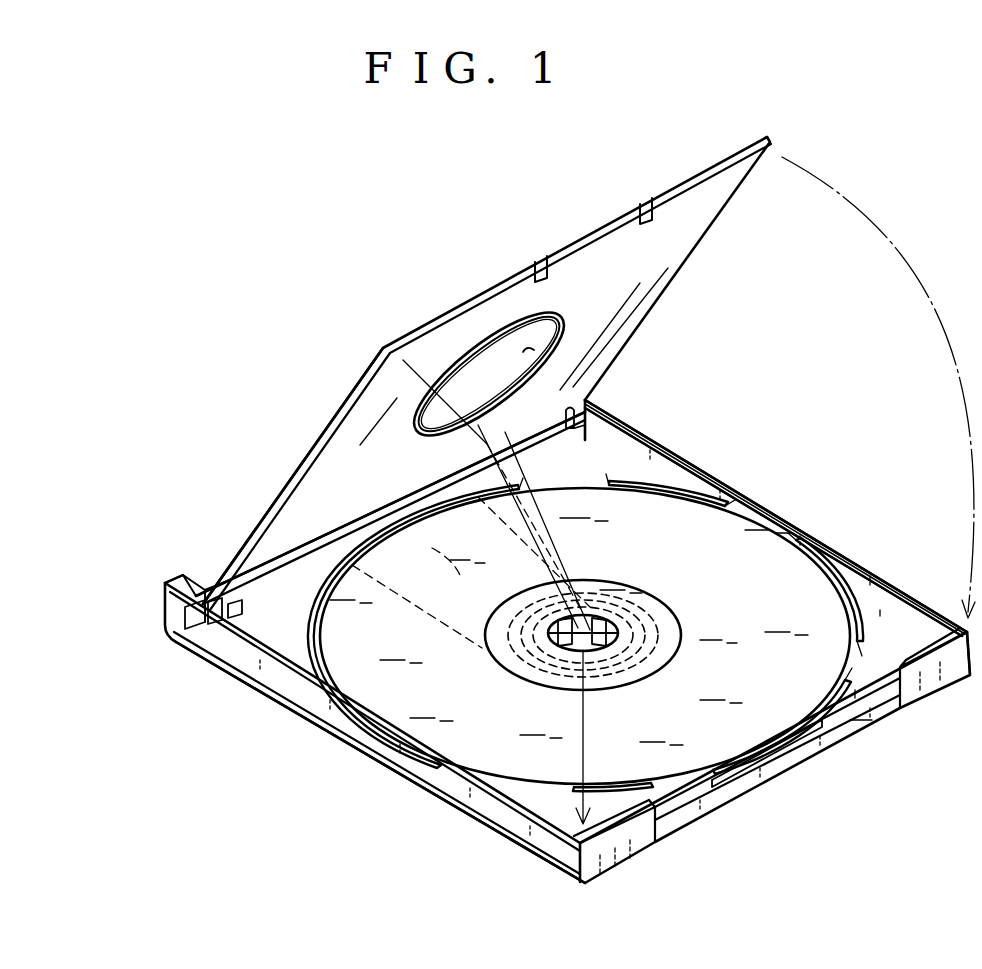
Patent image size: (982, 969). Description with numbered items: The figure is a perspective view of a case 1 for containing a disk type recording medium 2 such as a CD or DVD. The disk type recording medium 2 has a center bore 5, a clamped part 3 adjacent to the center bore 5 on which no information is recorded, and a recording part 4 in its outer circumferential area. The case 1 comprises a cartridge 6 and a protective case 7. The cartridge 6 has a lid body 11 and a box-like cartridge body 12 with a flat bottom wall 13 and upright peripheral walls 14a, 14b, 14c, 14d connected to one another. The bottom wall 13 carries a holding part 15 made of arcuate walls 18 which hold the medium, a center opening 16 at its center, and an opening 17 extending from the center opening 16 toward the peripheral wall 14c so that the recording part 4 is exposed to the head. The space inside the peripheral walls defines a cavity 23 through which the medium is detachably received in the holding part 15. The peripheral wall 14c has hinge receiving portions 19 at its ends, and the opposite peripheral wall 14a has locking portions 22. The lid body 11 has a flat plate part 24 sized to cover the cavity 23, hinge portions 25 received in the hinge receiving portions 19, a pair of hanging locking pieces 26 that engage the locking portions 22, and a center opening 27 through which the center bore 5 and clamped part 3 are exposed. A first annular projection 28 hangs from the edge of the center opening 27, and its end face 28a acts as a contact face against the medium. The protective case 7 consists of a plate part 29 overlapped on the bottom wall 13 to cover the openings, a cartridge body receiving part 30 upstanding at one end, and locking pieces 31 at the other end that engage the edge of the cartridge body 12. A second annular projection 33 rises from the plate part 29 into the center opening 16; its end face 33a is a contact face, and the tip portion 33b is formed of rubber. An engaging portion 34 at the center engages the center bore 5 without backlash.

The case 1 is at (275, 392).
The disk type recording medium 2 is at (775, 512).
The clamped part 3 is at (650, 608).
The recording part 4 is at (752, 602).
The center bore 5 is at (585, 622).
The cartridge 6 is at (357, 742).
The protective case 7 is at (172, 558).
The lid body 11 is at (284, 484).
The cartridge body 12 is at (472, 798).
The bottom wall 13 is at (868, 638).
The peripheral wall 14a is at (882, 718).
The peripheral wall 14b is at (880, 597).
The peripheral wall 14c is at (194, 590).
The peripheral wall 14d is at (527, 825).
The holding part 15 is at (742, 490).
The center opening 16 is at (670, 668).
The opening 17 is at (471, 546).
The arcuate walls 18 is at (700, 487).
The hinge receiving portions 19 is at (572, 430).
The locking portions 22 is at (808, 740).
The cavity 23 is at (643, 462).
The plate part 24 is at (355, 408).
The hinge portions 25 is at (592, 412).
The locking pieces 26 is at (650, 215).
The center opening 27 is at (530, 352).
The first annular projection 28 is at (560, 326).
The end face 28a is at (560, 320).
The plate part 29 is at (303, 712).
The cartridge body receiving part 30 is at (160, 610).
The locking pieces 31 is at (926, 692).
The second annular projection 33 is at (500, 665).
The end face 33a is at (502, 643).
The portion 33b is at (560, 672).
The engaging portion 34 is at (612, 672).